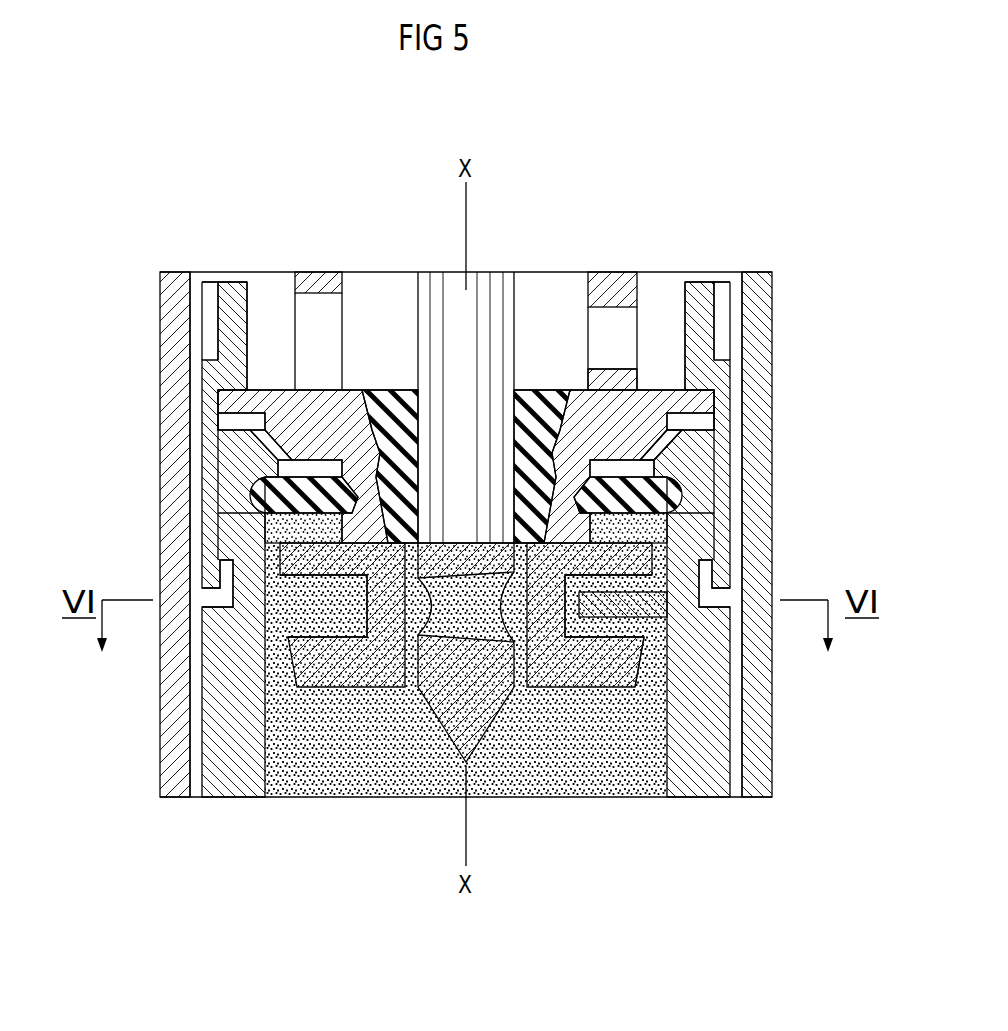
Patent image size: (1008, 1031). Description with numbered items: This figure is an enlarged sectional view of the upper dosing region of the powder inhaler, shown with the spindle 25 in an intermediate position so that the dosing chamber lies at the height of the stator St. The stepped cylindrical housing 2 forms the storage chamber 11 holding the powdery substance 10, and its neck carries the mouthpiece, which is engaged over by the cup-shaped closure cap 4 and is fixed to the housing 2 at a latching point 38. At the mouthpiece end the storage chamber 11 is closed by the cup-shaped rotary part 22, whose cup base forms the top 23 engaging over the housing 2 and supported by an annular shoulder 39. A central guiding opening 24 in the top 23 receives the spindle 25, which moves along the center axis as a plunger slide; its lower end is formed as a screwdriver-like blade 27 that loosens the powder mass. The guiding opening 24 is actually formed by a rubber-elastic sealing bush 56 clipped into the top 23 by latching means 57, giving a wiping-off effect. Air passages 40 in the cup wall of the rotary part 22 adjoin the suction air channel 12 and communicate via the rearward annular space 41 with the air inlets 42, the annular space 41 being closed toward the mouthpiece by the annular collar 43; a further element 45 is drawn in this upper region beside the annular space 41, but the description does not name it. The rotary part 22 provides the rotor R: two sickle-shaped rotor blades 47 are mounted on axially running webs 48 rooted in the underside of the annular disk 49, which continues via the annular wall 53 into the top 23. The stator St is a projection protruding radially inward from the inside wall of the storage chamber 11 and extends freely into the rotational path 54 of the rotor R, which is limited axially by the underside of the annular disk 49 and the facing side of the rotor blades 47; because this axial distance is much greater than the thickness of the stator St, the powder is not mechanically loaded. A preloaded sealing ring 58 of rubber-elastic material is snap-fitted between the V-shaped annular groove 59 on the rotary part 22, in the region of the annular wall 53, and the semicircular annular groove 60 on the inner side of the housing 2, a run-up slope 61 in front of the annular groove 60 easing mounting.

The housing 2 is at (690, 790).
The closure cap 4 is at (178, 286).
The substance 10 is at (285, 770).
The storage chamber 11 is at (265, 748).
The suction air channel 12 is at (355, 285).
The rotary part 22 is at (668, 458).
The top 23 is at (703, 402).
The guiding opening 24 is at (423, 433).
The spindle 25 is at (483, 290).
The blade 27 is at (478, 768).
The latching point 38 is at (708, 560).
The annular shoulder 39 is at (222, 387).
The air passage 40 is at (317, 325).
The annular space 41 is at (257, 287).
The air inlets 42 is at (215, 276).
The annular collar 43 is at (328, 677).
The gap 45 is at (207, 318).
The rotor blades 47 is at (605, 673).
The webs 48 is at (386, 605).
The annular disk 49 is at (305, 572).
The annular wall 53 is at (292, 540).
The rotational path 54 is at (313, 625).
The sealing bush 56 is at (533, 430).
The latching means 57 is at (657, 443).
The sealing ring 58 is at (252, 490).
The annular groove 59 is at (375, 440).
The annular groove 60 is at (252, 508).
The run-up slope 61 is at (252, 458).
The rotor R is at (639, 670).
The stator St is at (642, 605).